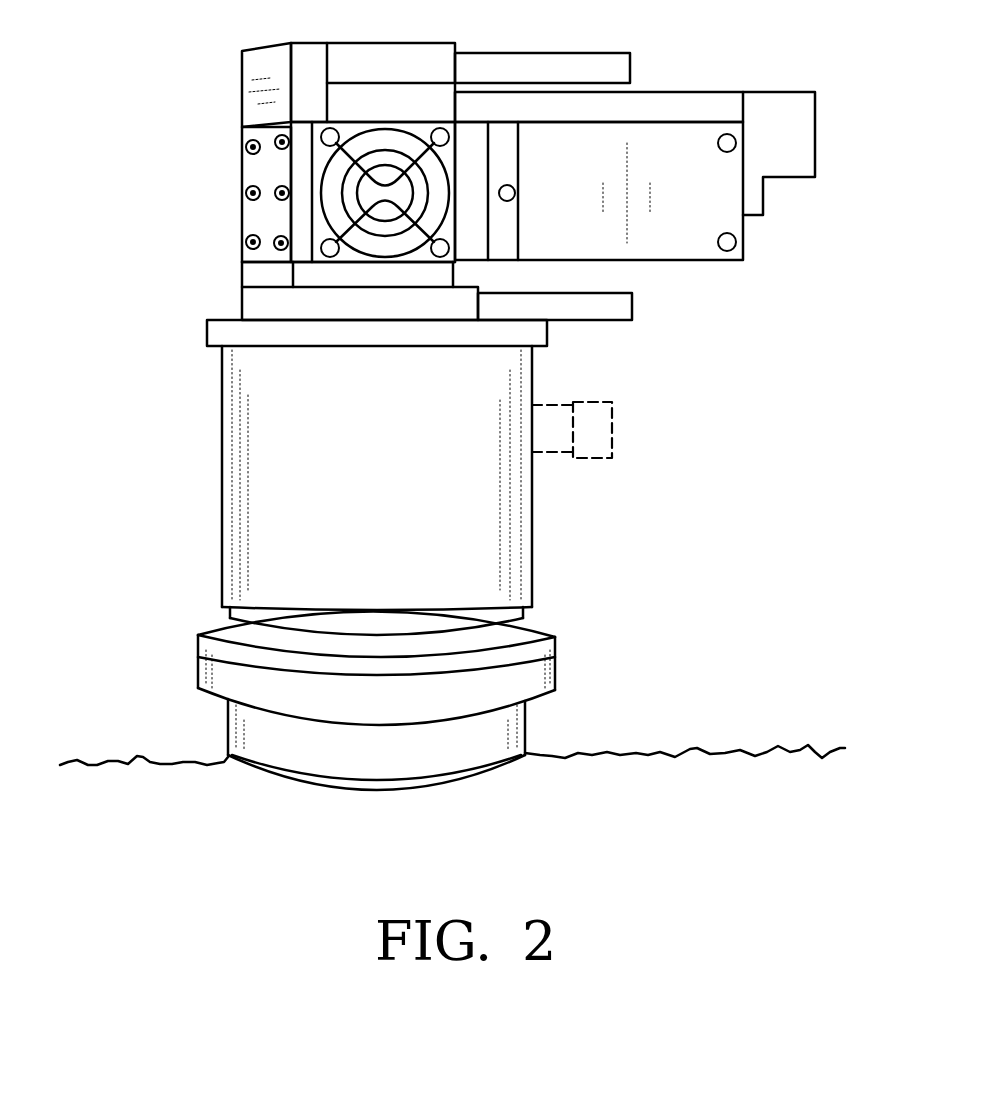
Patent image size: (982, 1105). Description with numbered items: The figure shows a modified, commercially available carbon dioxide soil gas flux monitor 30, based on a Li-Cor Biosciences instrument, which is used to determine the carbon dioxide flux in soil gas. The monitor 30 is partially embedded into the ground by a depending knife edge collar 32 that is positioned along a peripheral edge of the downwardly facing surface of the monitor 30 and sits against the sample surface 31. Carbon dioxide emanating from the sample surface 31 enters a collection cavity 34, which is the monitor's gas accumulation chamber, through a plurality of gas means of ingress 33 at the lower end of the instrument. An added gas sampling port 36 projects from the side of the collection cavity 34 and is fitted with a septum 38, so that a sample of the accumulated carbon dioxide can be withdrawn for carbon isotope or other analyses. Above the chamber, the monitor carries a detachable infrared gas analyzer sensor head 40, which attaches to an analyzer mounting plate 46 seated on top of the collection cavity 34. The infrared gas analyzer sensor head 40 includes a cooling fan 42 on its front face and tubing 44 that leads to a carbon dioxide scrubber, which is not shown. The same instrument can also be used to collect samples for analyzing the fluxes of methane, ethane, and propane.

The monitor 30 is at (203, 824).
The sample surface 31 is at (700, 745).
The knife edge collar 32 is at (477, 777).
The gas means of ingress 33 is at (377, 765).
The collection cavity 34 is at (222, 498).
The gas sampling port 36 is at (532, 452).
The septum 38 is at (612, 427).
The infrared gas analyzer sensor head 40 is at (237, 210).
The cooling fan 42 is at (433, 208).
The tubing 44 is at (632, 307).
The analyzer mounting plate 46 is at (207, 330).